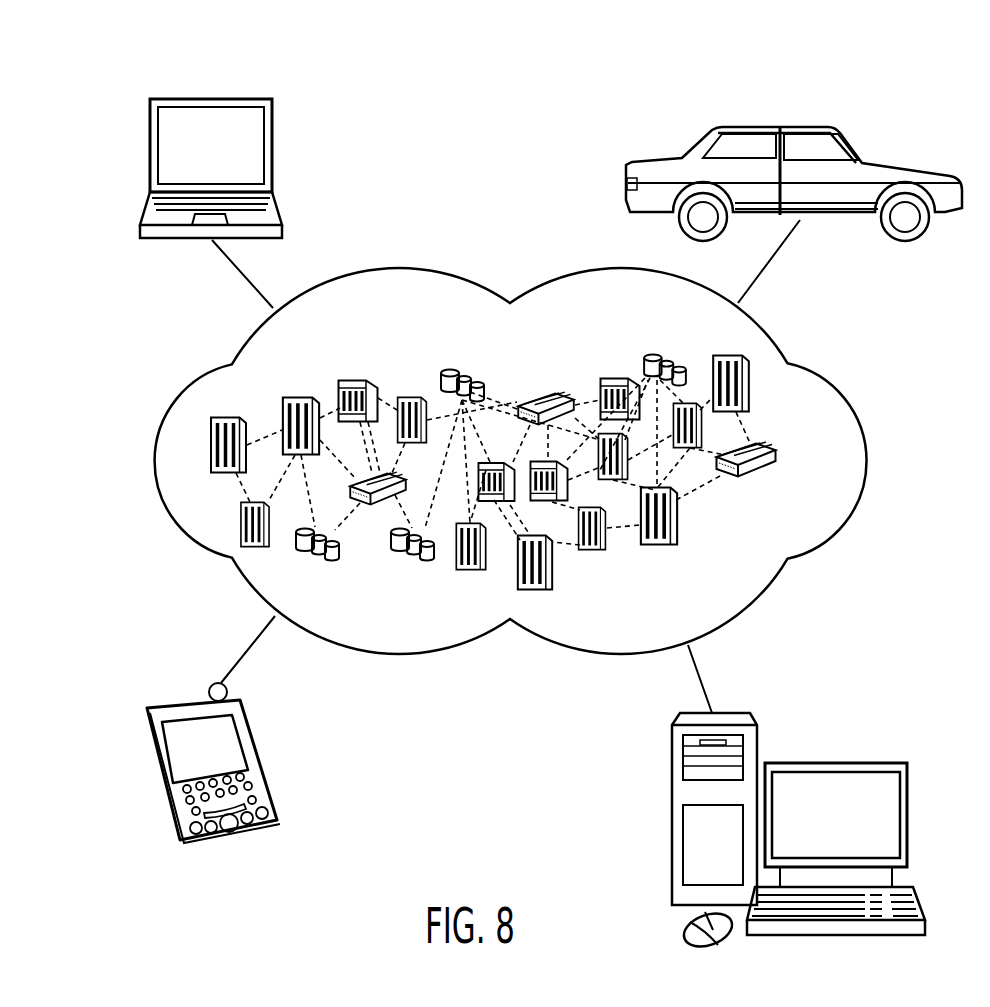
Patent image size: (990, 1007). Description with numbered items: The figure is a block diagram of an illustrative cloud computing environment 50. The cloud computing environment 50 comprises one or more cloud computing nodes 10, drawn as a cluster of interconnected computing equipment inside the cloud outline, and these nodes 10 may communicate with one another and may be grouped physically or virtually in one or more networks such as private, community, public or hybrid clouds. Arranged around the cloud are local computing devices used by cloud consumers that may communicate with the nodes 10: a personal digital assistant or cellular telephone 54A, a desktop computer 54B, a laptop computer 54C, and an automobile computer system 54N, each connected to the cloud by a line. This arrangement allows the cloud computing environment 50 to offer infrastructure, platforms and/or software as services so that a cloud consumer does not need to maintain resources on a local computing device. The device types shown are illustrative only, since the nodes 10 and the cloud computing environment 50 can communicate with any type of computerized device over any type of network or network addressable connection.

The cloud computing node 10 is at (781, 460).
The cloud computing environment 50 is at (848, 366).
The personal digital assistant or cellular telephone 54A is at (191, 698).
The desktop computer 54B is at (835, 763).
The laptop computer 54C is at (209, 98).
The automobile computer system 54N is at (772, 125).